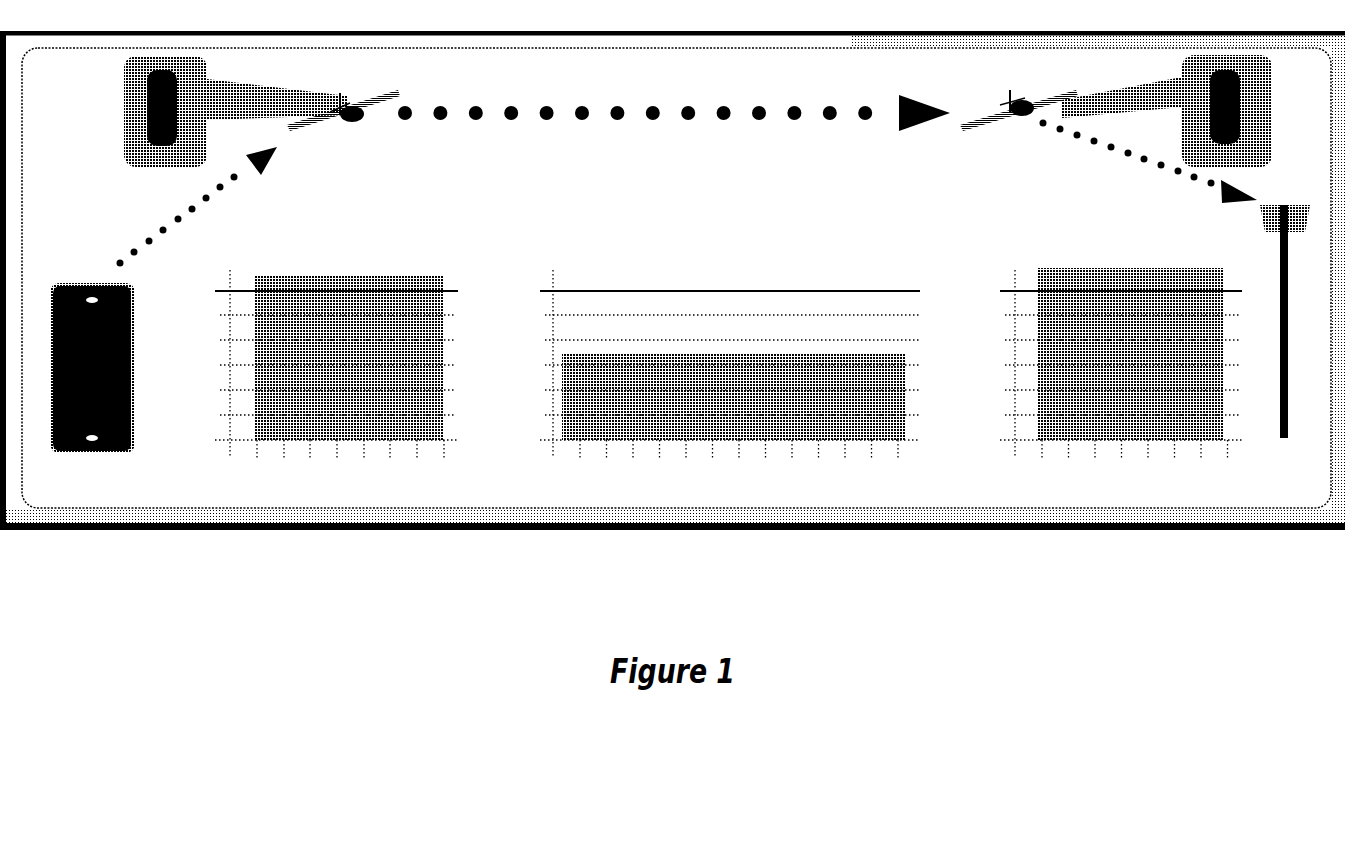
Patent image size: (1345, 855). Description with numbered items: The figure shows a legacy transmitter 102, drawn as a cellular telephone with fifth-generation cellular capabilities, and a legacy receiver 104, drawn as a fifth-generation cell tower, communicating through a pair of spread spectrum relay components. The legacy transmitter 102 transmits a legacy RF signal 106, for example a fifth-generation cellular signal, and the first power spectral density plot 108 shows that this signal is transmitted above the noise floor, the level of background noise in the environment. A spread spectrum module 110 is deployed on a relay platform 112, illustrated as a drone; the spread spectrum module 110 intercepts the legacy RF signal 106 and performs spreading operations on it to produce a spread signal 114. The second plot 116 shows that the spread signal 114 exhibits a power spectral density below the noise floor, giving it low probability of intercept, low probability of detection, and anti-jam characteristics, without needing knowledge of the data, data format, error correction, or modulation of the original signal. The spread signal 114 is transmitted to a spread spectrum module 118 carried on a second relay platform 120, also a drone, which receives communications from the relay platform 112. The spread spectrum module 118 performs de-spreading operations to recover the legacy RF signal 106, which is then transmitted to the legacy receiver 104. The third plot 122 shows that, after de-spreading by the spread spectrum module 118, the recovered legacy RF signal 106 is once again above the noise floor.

The legacy transmitter 102 is at (130, 431).
The legacy receiver 104 is at (1281, 205).
The legacy RF signal 106 is at (160, 231).
The power spectral density of legacy RF signal 108 is at (368, 249).
The spread spectrum module 110 is at (167, 90).
The relay platform 112 is at (372, 97).
The spread signal 114 is at (656, 112).
The power spectral density of spread signal 116 is at (731, 271).
The spread spectrum module 118 is at (1235, 97).
The relay platform 120 is at (1060, 96).
The power spectral density of recovered legacy RF signal 122 is at (1086, 258).